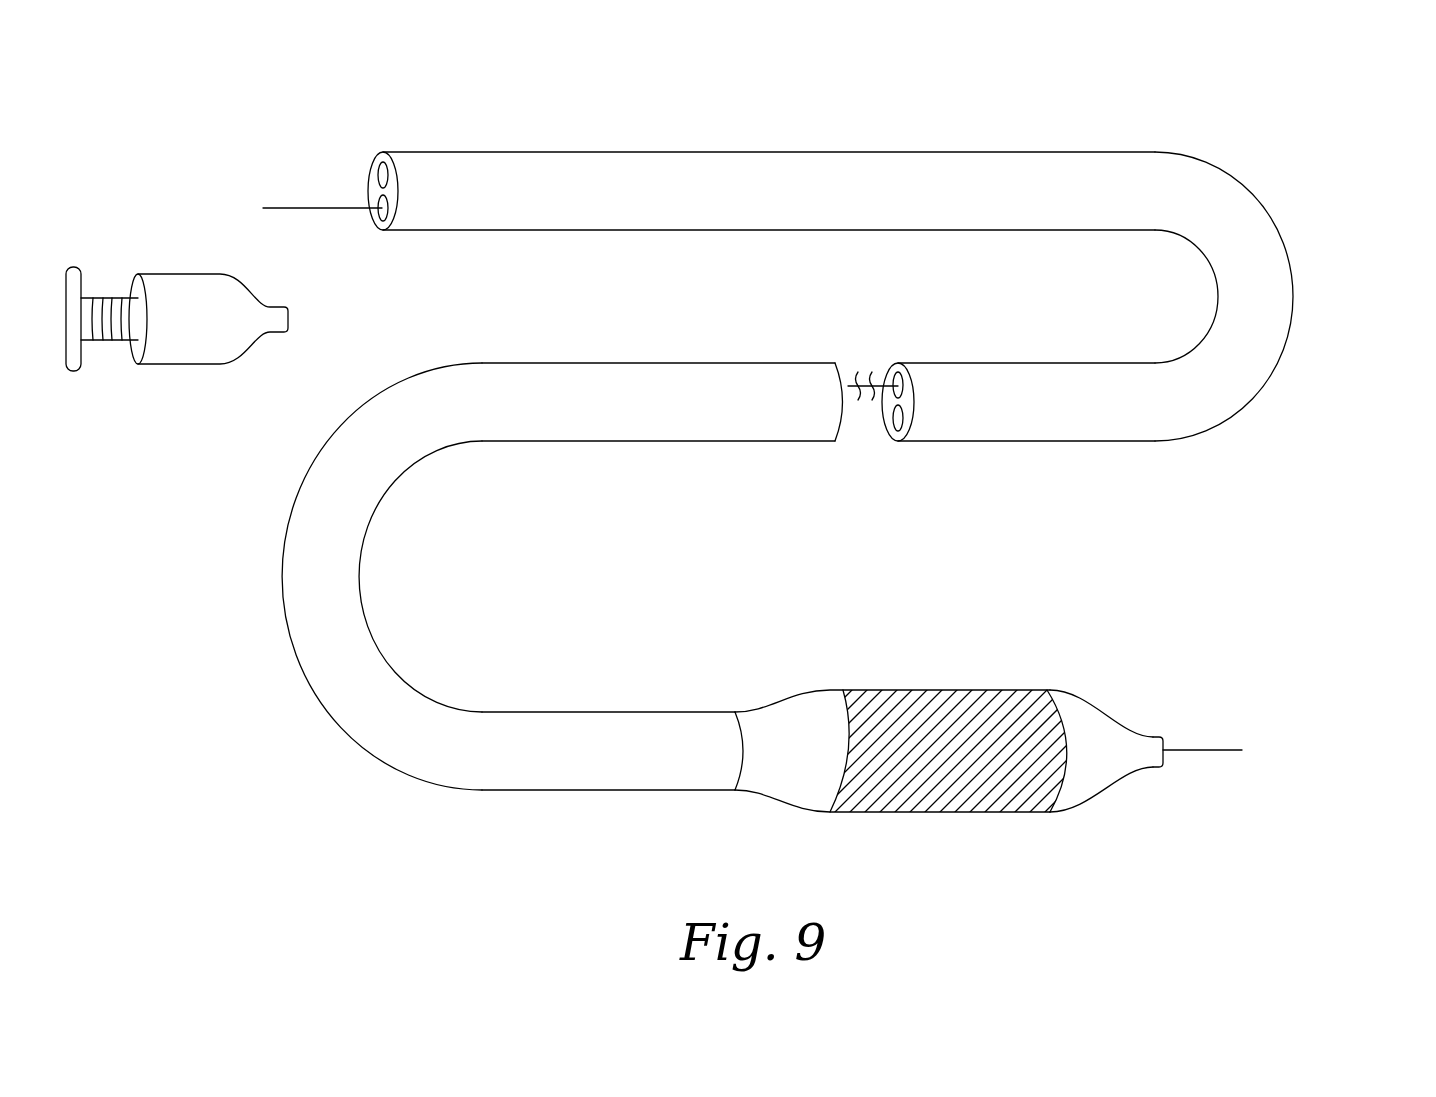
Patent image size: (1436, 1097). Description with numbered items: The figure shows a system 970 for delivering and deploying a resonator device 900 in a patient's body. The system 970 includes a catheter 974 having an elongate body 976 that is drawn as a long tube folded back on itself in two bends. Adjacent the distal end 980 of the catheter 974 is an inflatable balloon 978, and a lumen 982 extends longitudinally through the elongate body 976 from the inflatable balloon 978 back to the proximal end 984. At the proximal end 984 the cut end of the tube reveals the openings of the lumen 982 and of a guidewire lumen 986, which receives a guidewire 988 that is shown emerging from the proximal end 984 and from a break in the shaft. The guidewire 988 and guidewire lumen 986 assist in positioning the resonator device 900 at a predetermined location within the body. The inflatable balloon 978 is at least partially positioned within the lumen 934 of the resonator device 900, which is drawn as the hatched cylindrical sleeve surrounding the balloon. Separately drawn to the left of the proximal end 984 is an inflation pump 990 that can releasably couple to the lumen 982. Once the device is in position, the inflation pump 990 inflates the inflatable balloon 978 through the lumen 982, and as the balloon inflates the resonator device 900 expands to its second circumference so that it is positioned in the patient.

The system 970 is at (883, 302).
The catheter 974 is at (1117, 478).
The elongate body 976 is at (1293, 299).
The inflatable balloon 978 is at (1098, 701).
The distal end 980 is at (1160, 711).
The lumen 982 is at (378, 168).
The proximal end 984 is at (394, 132).
The guidewire lumen 986 is at (378, 212).
The guidewire 988 is at (302, 208).
The inflation pump 990 is at (192, 255).
The resonator device 900 is at (930, 691).
The lumen 934 is at (971, 725).